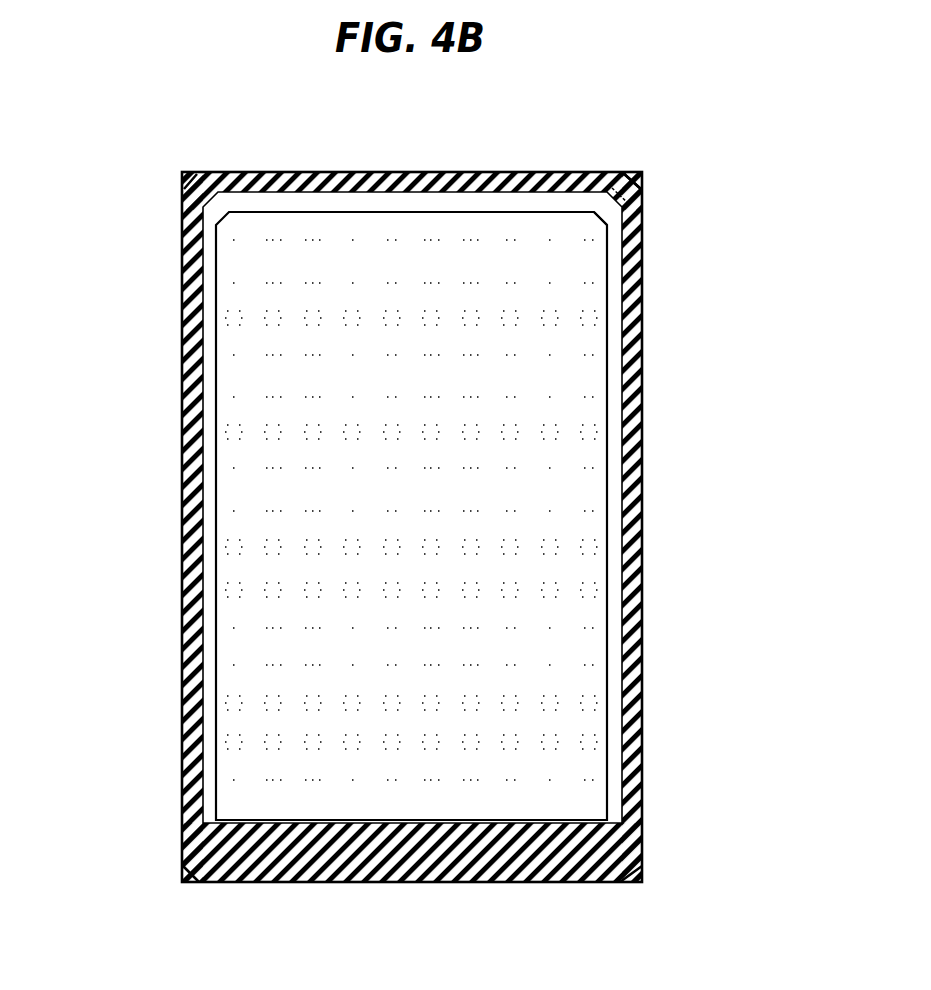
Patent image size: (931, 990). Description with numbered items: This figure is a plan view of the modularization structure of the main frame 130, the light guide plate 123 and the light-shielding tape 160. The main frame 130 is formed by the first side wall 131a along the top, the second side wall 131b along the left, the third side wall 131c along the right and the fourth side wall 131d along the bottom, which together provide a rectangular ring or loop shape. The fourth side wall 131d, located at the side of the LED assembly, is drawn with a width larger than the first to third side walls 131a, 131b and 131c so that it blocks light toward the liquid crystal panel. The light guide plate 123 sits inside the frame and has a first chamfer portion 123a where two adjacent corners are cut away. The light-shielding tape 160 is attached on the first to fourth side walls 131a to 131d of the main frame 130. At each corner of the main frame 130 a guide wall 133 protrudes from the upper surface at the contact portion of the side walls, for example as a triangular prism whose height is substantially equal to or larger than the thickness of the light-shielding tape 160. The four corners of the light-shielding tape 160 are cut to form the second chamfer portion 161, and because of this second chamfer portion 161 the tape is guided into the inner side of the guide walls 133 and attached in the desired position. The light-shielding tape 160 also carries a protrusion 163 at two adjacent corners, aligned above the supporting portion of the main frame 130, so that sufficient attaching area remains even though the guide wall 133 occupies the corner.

The main frame 130 is at (582, 155).
The first side wall 131a is at (430, 180).
The second side wall 131b is at (185, 394).
The third side wall 131c is at (633, 372).
The fourth side wall 131d is at (443, 853).
The guide wall 133 is at (645, 177).
The second chamfer portion 161 is at (650, 190).
The protrusion 163 is at (625, 200).
The first chamfer portion 123a is at (617, 222).
The light guide plate 123 is at (592, 495).
The light-shielding tape 160 is at (637, 548).